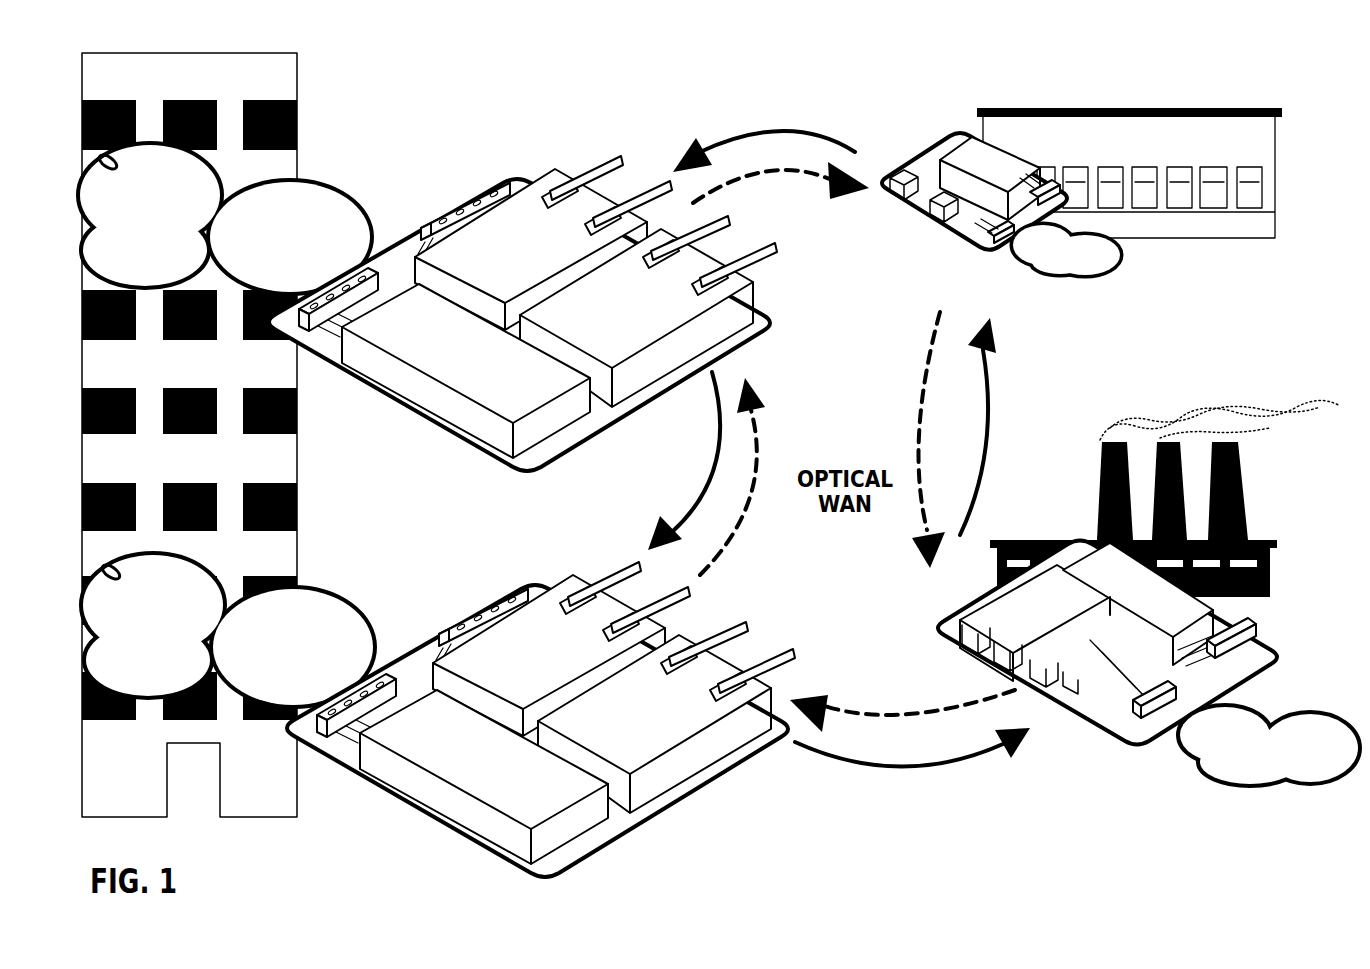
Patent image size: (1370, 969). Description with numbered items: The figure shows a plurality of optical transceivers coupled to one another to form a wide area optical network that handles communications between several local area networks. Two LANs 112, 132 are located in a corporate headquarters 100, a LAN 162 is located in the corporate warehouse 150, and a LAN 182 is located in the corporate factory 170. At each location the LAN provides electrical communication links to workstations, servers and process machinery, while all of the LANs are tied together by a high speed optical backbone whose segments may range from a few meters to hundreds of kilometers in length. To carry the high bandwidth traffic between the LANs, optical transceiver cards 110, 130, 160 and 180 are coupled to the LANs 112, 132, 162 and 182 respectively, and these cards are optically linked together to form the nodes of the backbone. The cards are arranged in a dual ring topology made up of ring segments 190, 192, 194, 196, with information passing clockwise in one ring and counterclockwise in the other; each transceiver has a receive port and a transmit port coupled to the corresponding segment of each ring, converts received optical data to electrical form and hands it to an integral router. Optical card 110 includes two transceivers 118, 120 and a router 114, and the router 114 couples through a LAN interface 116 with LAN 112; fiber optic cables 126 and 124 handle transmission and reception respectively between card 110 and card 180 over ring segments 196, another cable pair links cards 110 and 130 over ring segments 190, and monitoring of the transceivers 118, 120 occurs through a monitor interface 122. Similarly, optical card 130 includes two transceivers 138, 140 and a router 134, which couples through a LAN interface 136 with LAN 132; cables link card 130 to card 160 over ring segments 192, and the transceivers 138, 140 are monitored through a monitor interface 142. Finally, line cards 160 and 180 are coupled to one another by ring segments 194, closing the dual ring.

The corporate headquarters 100 is at (240, 818).
The optical transceiver card 110 is at (712, 792).
The LAN 112 is at (322, 603).
The router 114 is at (423, 757).
The LAN interface 116 is at (387, 666).
The transceiver 118 is at (655, 722).
The transceiver 120 is at (552, 663).
The monitor interface 122 is at (484, 605).
The fiber optic cable 124 is at (800, 663).
The fiber optic cable 126 is at (764, 636).
The optical transceiver card 130 is at (522, 486).
The LAN 132 is at (320, 196).
The router 134 is at (402, 350).
The LAN interface 136 is at (372, 258).
The transceiver 138 is at (620, 310).
The transceiver 140 is at (528, 250).
The monitor interface 142 is at (462, 205).
The corporate warehouse 150 is at (1185, 108).
The optical transceiver card 160 is at (980, 250).
The LAN 162 is at (1110, 262).
The corporate factory 170 is at (1110, 438).
The optical transceiver card 180 is at (1140, 750).
The LAN 182 is at (1295, 785).
The ring segments 190 is at (706, 473).
The ring segments 192 is at (771, 167).
The ring segments 194 is at (954, 440).
The ring segments 196 is at (910, 728).